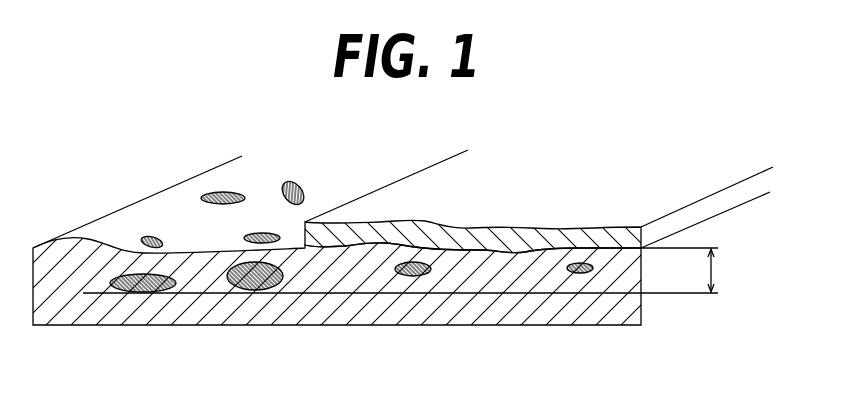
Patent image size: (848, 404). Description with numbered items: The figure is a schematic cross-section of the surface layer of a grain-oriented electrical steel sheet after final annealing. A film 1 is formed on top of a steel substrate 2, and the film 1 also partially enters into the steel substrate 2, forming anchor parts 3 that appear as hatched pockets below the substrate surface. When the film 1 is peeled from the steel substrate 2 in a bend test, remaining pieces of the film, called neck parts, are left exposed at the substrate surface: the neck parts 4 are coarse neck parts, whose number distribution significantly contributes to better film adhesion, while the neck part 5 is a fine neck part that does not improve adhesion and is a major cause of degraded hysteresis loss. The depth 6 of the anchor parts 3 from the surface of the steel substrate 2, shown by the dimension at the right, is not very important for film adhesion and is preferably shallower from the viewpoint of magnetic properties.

The film 1 is at (525, 200).
The steel substrate 2 is at (183, 237).
The anchor part 3 is at (143, 292).
The neck part 4 is at (235, 190).
The neck part 5 is at (152, 236).
The anchor part depth 6 is at (686, 270).